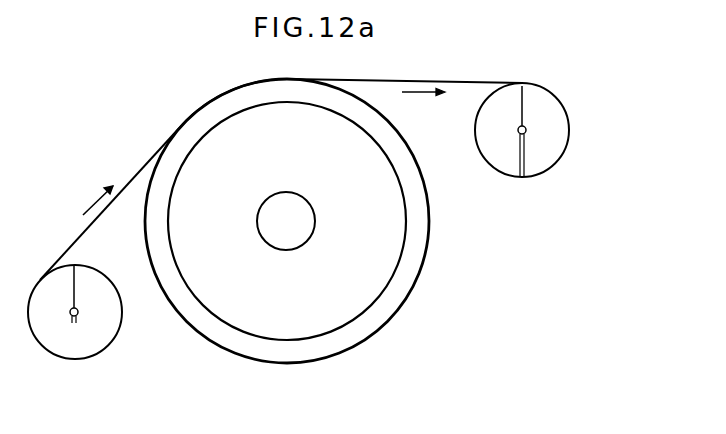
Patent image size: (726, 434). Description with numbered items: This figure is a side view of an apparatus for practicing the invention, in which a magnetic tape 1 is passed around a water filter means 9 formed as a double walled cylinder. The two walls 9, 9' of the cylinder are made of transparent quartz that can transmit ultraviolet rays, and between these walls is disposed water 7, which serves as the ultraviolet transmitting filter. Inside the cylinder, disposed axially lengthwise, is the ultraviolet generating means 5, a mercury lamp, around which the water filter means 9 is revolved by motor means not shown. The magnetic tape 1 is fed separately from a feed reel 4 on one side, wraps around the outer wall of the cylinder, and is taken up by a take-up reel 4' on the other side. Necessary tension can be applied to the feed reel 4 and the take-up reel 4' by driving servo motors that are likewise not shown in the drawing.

The magnetic tape 1 is at (440, 80).
The feed reel 4 is at (81, 309).
The take-up reel 4' is at (529, 112).
The ultraviolet generating means 5 is at (297, 232).
The water 7 is at (206, 122).
The water filter means 9 is at (298, 221).
The inner wall of double walled cylinder 9' is at (312, 221).